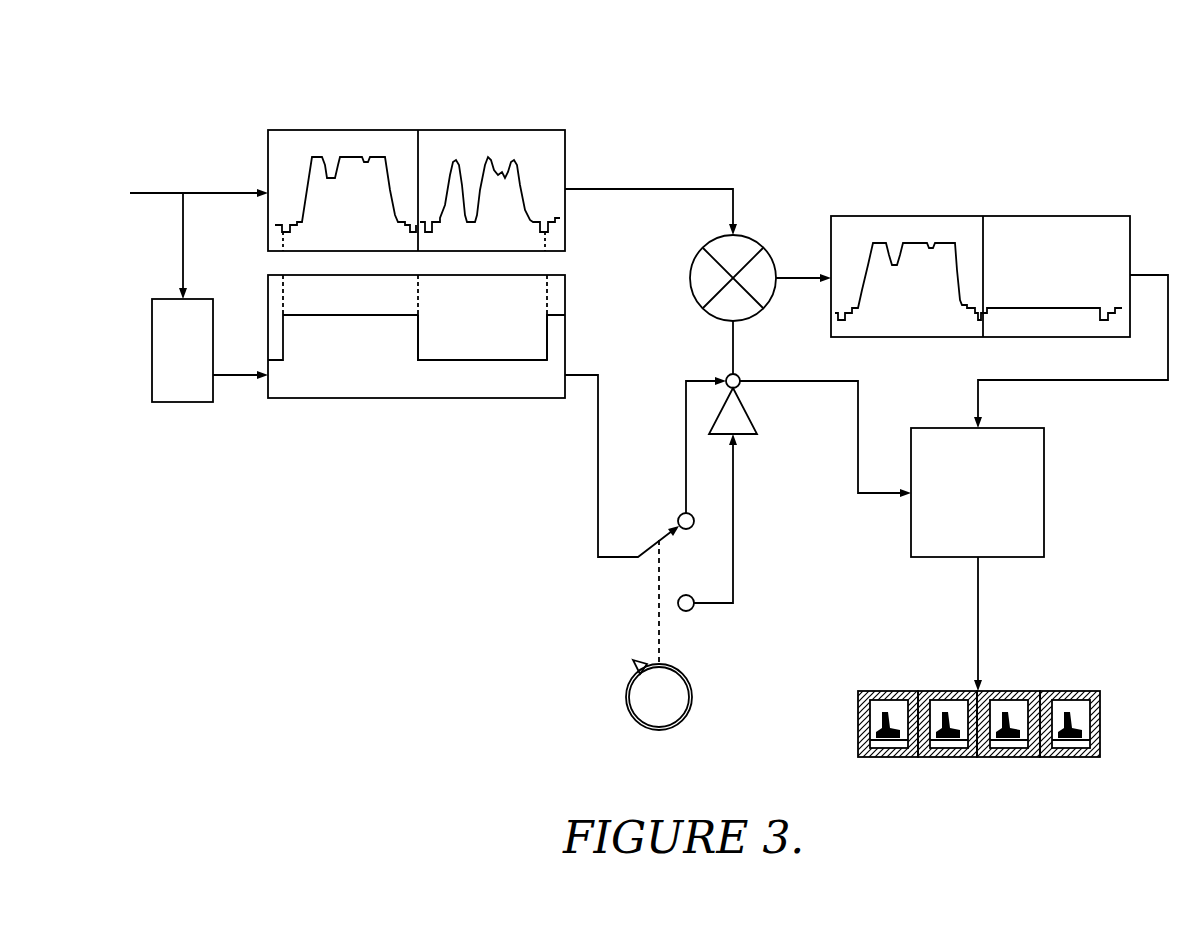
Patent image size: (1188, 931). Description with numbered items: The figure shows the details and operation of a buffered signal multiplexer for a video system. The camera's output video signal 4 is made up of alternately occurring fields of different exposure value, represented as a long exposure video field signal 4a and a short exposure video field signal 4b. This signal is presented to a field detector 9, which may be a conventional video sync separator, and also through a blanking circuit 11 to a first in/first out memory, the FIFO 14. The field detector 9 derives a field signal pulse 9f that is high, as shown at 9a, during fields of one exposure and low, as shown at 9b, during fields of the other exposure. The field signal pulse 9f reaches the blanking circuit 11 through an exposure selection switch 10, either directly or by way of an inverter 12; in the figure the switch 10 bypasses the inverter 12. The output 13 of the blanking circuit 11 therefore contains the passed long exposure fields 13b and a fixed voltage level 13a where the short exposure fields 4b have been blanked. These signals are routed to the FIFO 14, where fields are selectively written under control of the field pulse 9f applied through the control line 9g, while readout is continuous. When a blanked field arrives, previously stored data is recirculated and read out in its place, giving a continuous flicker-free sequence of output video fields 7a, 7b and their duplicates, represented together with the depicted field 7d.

The camera output video signal 4 is at (580, 124).
The long exposure video field signal 4a is at (345, 120).
The short exposure video field signal 4b is at (496, 120).
The field detector 9 is at (182, 350).
The high state of field signal pulse 9a is at (348, 408).
The low state of field signal pulse 9b is at (497, 408).
The field signal pulse 9f is at (578, 311).
The control line 9g is at (848, 500).
The exposure selection switch 10 is at (615, 698).
The blanking circuit 11 is at (766, 221).
The inverter 12 is at (758, 416).
The blanking circuit output 13 is at (982, 205).
The blanked video field signal 13a is at (1061, 205).
The passed video field signal 13b is at (913, 205).
The FIFO 14 is at (977, 492).
The output video field 7a is at (888, 681).
The output video field 7b is at (1009, 681).
The seat 7d is at (948, 681).